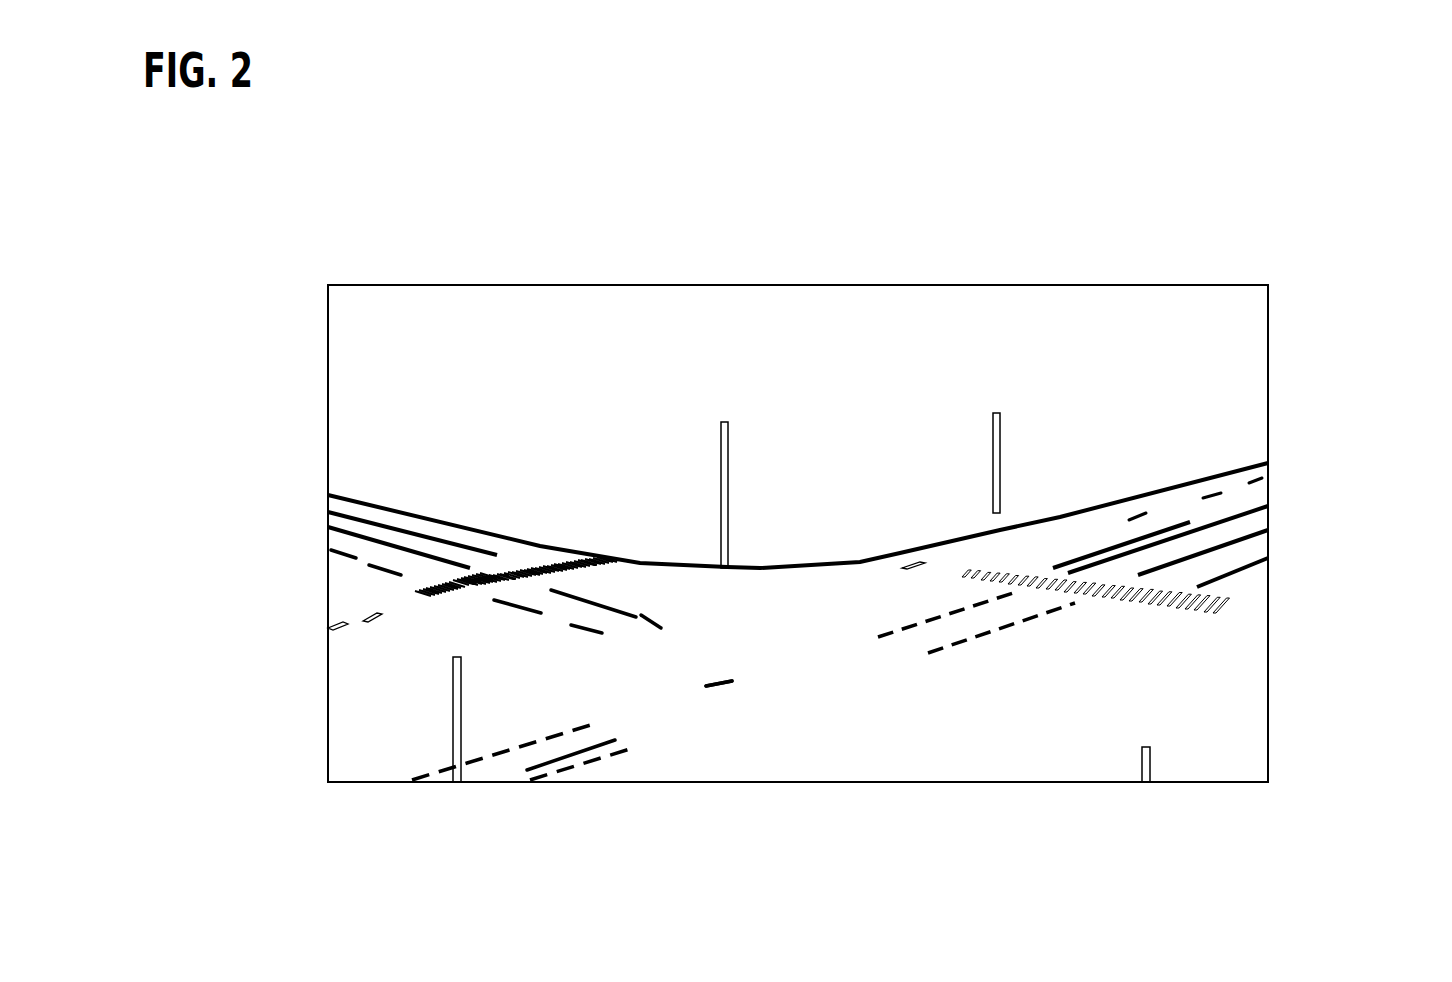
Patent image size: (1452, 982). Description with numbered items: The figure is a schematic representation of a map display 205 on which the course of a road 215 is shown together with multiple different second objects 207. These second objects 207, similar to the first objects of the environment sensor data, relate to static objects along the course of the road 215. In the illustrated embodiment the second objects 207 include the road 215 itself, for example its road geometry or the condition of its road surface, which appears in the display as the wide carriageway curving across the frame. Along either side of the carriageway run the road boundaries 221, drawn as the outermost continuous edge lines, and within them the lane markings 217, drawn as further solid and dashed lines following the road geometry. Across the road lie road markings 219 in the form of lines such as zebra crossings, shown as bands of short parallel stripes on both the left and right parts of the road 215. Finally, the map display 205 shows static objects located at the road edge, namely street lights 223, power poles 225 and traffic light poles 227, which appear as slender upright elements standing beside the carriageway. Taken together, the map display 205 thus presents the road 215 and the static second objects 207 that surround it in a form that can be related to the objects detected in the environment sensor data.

The map display 205 is at (313, 279).
The second objects 207 is at (785, 523).
The road 215 is at (801, 710).
The lane markings 217 is at (348, 517).
The road markings 219 is at (327, 625).
The road boundaries 221 is at (358, 497).
The street lights 223 is at (724, 422).
The power poles 225 is at (996, 413).
The traffic light poles 227 is at (458, 782).